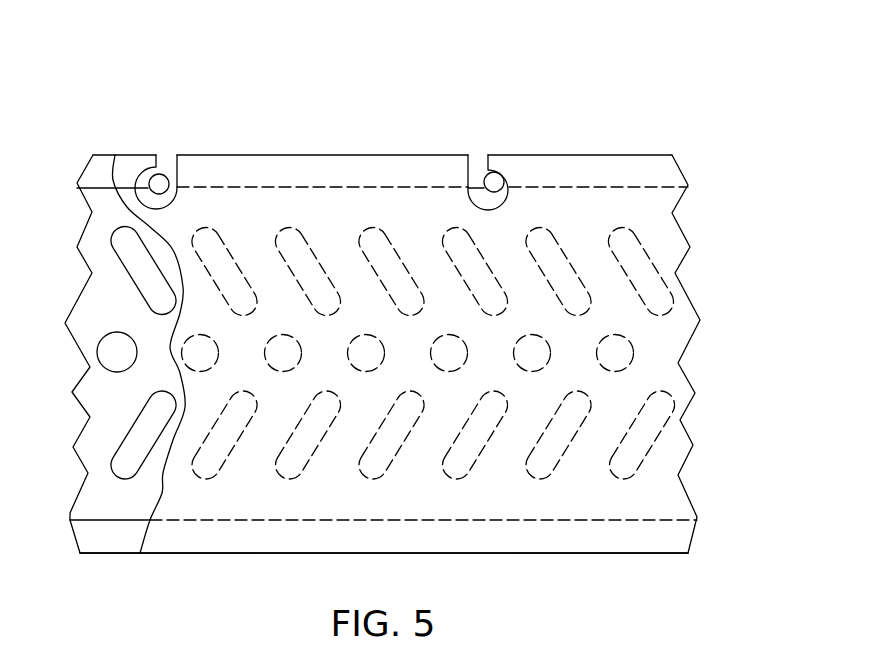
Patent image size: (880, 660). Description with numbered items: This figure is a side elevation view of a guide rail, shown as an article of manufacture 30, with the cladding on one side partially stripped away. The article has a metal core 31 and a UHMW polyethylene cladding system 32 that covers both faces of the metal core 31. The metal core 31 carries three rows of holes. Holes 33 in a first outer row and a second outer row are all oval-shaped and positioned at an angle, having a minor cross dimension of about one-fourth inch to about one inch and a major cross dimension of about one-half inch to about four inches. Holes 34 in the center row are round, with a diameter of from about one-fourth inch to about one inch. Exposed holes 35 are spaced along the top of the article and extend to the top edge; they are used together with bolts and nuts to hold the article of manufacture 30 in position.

The article of manufacture 30 is at (605, 150).
The metal core 31 is at (90, 387).
The UHMW polyethylene cladding system 32 is at (247, 510).
The holes 33 is at (647, 288).
The holes 34 is at (625, 357).
The exposed holes 35 is at (163, 188).